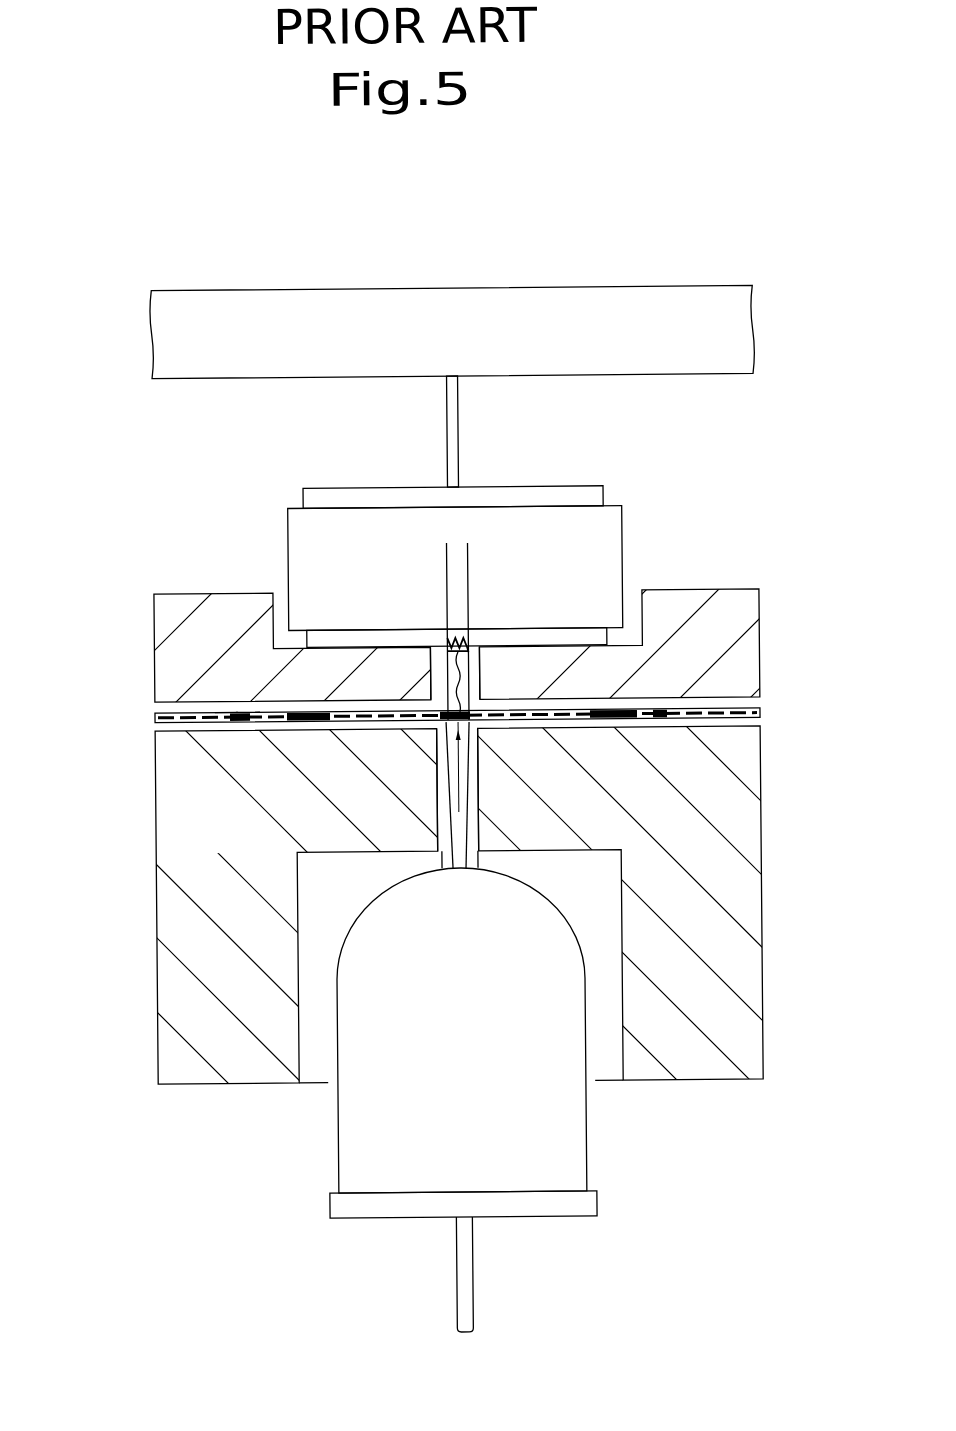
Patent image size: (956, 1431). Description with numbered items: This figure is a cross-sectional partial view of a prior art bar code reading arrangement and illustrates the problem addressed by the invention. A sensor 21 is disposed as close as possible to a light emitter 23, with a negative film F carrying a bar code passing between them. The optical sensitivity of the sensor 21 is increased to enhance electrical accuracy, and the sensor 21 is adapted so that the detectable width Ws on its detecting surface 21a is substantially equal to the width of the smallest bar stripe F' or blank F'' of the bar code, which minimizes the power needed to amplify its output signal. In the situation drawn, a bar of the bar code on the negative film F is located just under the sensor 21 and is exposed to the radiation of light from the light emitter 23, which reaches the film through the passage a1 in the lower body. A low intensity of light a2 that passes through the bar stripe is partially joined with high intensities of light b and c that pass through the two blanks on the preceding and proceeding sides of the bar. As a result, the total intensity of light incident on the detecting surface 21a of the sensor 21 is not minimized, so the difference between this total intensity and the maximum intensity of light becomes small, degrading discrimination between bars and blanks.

The sensor 21 is at (302, 536).
The detecting surface 21a is at (463, 645).
The detectable width Ws is at (498, 552).
The negative film F is at (426, 744).
The smallest bar stripe F' is at (151, 626).
The blank F'' is at (188, 594).
The low intensity of light a2 is at (478, 690).
The lower die channel a1 is at (477, 813).
The high intensity of light b is at (440, 755).
The high intensity of light c is at (478, 757).
The light emitter 23 is at (346, 1142).